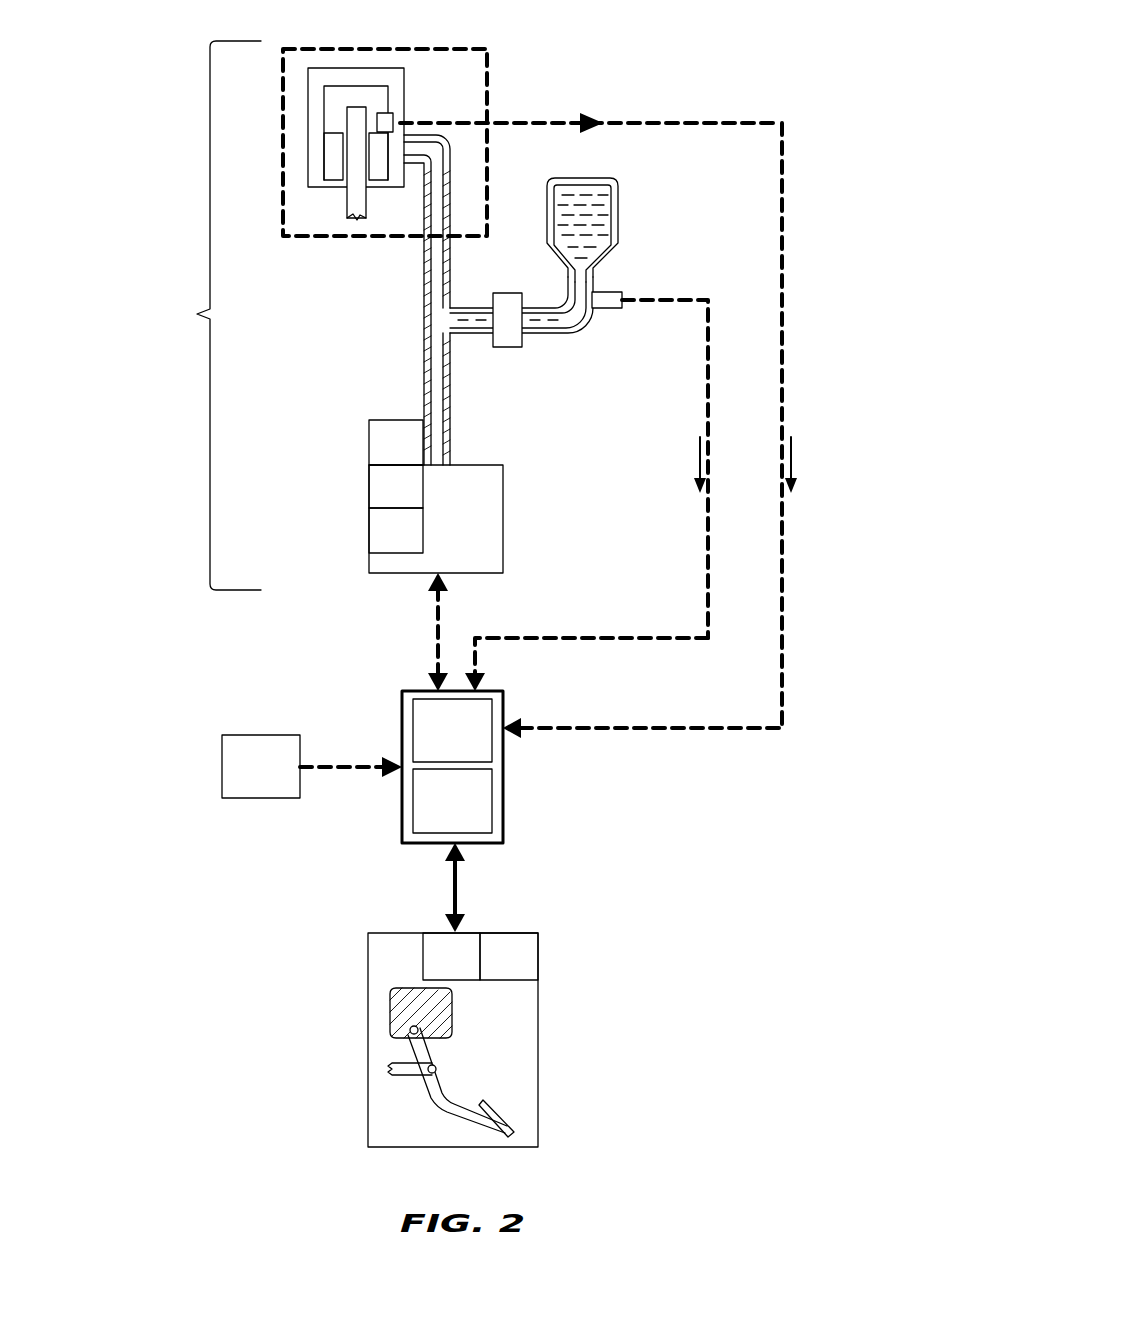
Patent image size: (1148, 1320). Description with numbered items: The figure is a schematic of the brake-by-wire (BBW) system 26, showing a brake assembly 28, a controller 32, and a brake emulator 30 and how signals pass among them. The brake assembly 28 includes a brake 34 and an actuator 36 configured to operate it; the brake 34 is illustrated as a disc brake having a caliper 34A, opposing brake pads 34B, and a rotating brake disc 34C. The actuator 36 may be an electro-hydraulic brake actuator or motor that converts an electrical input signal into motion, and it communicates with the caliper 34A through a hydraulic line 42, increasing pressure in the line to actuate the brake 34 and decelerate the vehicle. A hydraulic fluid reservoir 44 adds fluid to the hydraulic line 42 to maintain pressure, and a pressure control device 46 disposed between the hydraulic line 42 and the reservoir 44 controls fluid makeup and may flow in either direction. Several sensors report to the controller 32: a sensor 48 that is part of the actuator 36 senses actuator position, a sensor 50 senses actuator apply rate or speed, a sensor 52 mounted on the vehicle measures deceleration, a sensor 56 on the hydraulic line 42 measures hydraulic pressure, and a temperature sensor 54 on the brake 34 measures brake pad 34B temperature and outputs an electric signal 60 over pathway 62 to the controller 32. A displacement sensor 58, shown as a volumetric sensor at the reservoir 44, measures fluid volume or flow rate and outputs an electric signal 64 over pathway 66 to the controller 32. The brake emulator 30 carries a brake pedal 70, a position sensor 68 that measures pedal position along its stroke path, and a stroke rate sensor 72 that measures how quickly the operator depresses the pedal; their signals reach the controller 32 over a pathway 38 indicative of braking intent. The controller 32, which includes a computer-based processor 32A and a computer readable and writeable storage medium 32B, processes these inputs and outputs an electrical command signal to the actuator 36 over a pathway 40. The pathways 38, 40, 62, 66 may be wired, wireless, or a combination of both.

The BBW system 26 is at (679, 60).
The brake assembly 28 is at (200, 314).
The brake emulator 30 is at (544, 1036).
The controller 32 is at (508, 775).
The processor 32A is at (452, 730).
The storage medium 32B is at (452, 801).
The brake 34 is at (493, 102).
The caliper 34A is at (405, 90).
The brake pads 34B is at (380, 181).
The brake disc 34C is at (345, 118).
The actuator 36 is at (508, 514).
The pathway 38 is at (460, 890).
The pathway 40 is at (440, 628).
The hydraulic line 42 is at (450, 440).
The hydraulic fluid reservoir 44 is at (619, 213).
The pressure control device 46 is at (522, 338).
The sensor 48 is at (396, 486).
The sensor 50 is at (396, 530).
The sensor 52 is at (312, 766).
The temperature sensor 54 is at (394, 120).
The sensor 56 is at (396, 442).
The displacement sensor 58 is at (608, 292).
The electric signal 60 is at (791, 463).
The pathway 62 is at (782, 605).
The electric signal 64 is at (700, 463).
The pathway 66 is at (708, 578).
The position sensor 68 is at (451, 956).
The brake pedal 70 is at (440, 1075).
The stroke rate sensor 72 is at (509, 956).